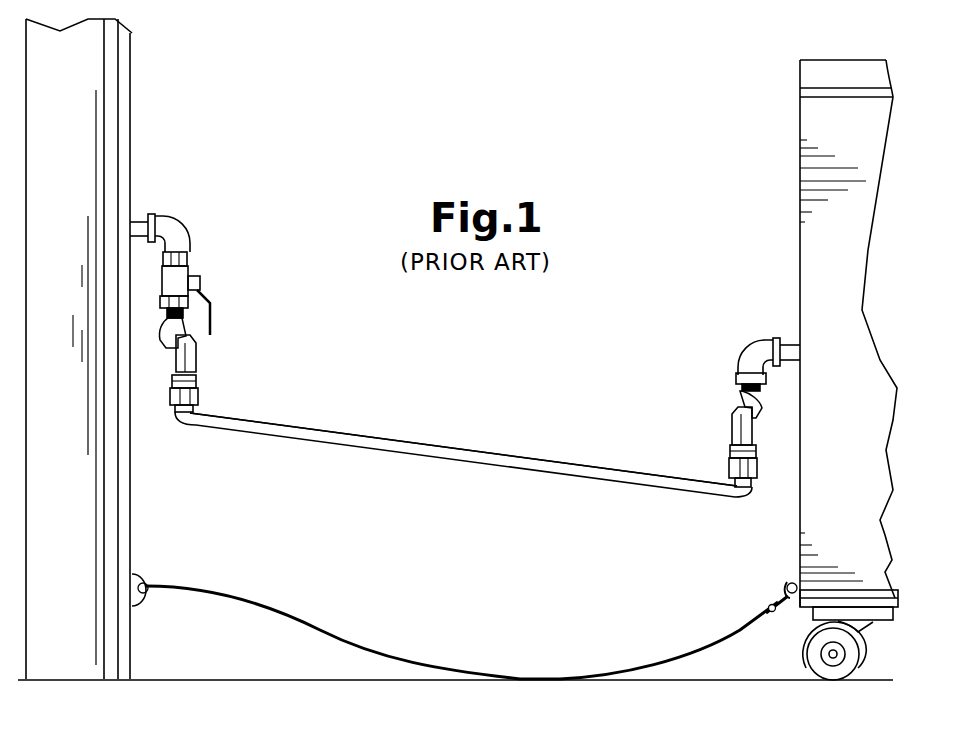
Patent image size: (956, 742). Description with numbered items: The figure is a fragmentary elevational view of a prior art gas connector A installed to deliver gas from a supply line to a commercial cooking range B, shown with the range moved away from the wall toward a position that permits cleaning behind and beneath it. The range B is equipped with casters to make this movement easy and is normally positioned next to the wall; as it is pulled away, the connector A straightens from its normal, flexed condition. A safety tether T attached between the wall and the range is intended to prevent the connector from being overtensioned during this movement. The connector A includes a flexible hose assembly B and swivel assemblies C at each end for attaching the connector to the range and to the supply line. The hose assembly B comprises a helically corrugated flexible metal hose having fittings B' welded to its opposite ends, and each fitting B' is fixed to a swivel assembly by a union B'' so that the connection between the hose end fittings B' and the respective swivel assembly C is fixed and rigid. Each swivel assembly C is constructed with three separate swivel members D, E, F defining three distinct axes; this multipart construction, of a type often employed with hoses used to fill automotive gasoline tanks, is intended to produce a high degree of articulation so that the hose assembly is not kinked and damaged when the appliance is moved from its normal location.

The connector A is at (392, 425).
The commercial cooking range B is at (536, 370).
The fitting B' is at (475, 464).
The union B'' is at (464, 413).
The swivel assembly C is at (213, 352).
The swivel member D is at (172, 318).
The swivel member E is at (165, 340).
The swivel member F is at (174, 372).
The safety tether T is at (314, 617).